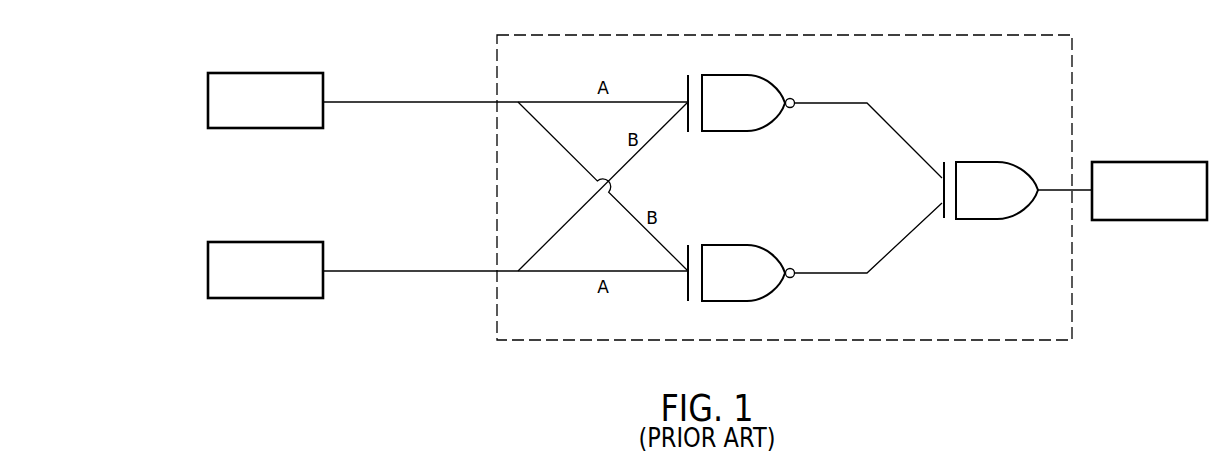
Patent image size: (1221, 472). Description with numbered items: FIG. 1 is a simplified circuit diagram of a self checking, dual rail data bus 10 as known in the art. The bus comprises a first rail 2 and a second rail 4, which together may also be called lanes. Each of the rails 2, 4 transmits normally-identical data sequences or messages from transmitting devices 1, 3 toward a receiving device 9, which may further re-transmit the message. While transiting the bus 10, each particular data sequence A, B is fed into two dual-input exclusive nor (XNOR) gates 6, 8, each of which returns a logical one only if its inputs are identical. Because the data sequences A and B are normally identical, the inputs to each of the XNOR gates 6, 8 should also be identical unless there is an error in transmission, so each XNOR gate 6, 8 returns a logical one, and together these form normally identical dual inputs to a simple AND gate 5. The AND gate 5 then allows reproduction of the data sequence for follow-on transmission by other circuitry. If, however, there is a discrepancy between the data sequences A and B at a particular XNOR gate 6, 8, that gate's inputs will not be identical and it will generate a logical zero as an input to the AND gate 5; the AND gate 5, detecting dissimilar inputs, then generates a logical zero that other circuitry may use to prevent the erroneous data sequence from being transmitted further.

The transmitting device 1 is at (237, 73).
The first rail 2 is at (460, 101).
The transmitting device 3 is at (252, 242).
The second rail 4 is at (453, 270).
The AND gate 5 is at (990, 203).
The XNOR gate 6 is at (740, 115).
The XNOR gate 8 is at (740, 285).
The receiving device 9 is at (1147, 162).
The dual rail data bus 10 is at (975, 79).